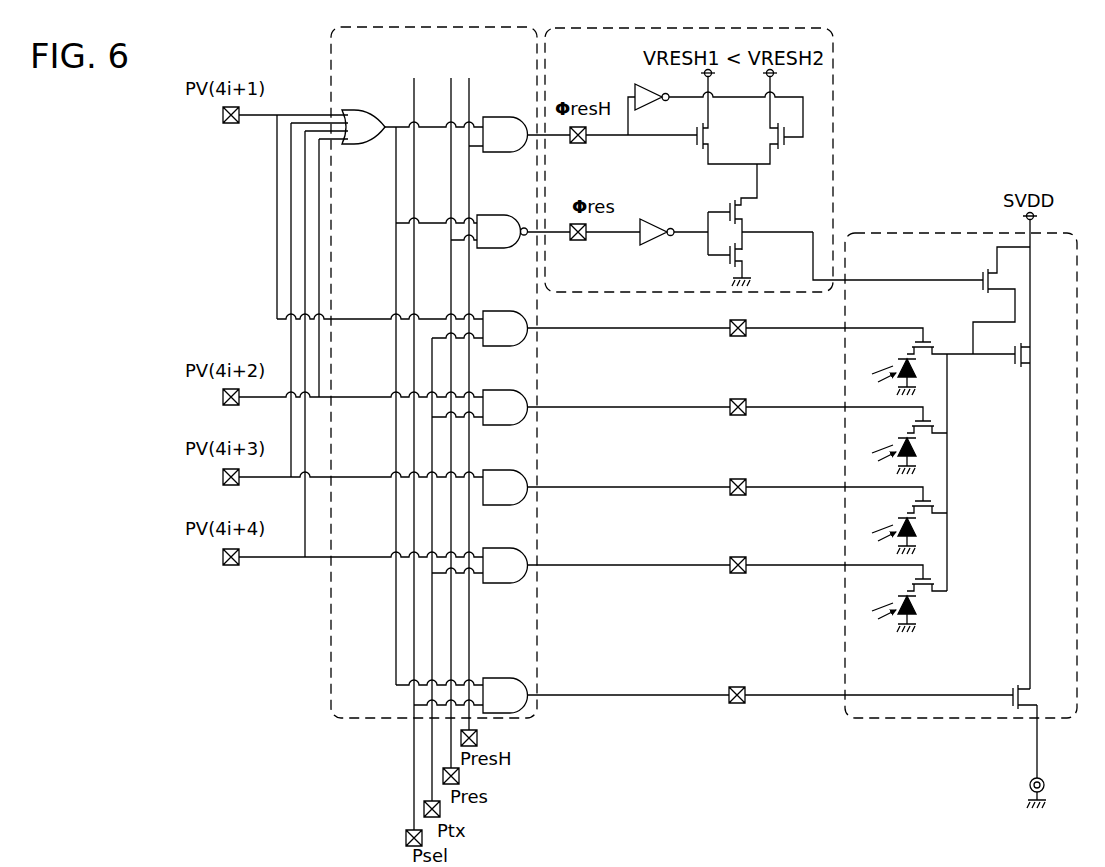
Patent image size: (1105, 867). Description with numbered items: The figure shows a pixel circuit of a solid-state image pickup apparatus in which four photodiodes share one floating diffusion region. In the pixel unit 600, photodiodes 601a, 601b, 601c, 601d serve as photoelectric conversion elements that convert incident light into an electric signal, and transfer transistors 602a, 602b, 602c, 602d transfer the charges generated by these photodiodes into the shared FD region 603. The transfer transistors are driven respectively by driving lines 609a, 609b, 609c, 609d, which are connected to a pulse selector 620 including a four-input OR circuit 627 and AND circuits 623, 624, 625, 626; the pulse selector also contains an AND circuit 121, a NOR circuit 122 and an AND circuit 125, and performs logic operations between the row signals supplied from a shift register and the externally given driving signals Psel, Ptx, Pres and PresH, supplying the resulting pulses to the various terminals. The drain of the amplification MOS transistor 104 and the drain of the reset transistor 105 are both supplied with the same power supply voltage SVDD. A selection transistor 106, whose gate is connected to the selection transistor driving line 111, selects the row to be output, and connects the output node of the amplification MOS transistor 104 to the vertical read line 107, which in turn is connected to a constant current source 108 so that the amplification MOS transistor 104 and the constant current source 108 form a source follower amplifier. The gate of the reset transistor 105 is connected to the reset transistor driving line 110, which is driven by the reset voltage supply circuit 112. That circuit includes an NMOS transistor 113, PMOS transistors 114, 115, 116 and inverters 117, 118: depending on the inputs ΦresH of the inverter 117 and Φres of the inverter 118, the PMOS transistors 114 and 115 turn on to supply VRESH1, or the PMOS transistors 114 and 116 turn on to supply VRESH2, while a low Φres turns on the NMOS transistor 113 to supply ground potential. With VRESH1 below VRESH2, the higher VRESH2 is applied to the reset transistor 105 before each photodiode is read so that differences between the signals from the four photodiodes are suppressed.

The pulse selector 620 is at (331, 77).
The 4-input OR circuit 627 is at (356, 110).
The AND circuit 121 is at (505, 117).
The NOR circuit 122 is at (500, 215).
The AND circuit 623 is at (505, 311).
The AND circuit 624 is at (505, 390).
The AND circuit 625 is at (505, 470).
The AND circuit 626 is at (505, 548).
The AND circuit 125 is at (505, 678).
The reset voltage supply circuit 112 is at (835, 135).
The inverter 117 is at (635, 92).
The inverter 118 is at (640, 246).
The PMOS transistor 115 is at (697, 150).
The PMOS transistor 116 is at (784, 150).
The PMOS transistor 114 is at (745, 212).
The NMOS transistor 113 is at (745, 255).
The reset transistor driving line 110 is at (835, 268).
The pixel unit 600 is at (918, 233).
The reset transistor 105 is at (985, 272).
The amplification MOS transistor 104 is at (1030, 356).
The FD region 603 is at (962, 354).
The photodiode 601a is at (898, 361).
The photodiode 601b is at (882, 444).
The photodiode 601c is at (882, 524).
The photodiode 601d is at (882, 602).
The transfer transistor 602a is at (918, 355).
The transfer transistor 602b is at (953, 453).
The transfer transistor 602c is at (952, 533).
The transfer transistor 602d is at (953, 611).
The driving line 609a is at (828, 328).
The driving line 609b is at (828, 407).
The driving line 609c is at (828, 487).
The driving line 609d is at (828, 565).
The selection transistor driving line 111 is at (826, 695).
The selection transistor 106 is at (1013, 689).
The vertical read line 107 is at (1037, 748).
The constant current source 108 is at (1030, 785).